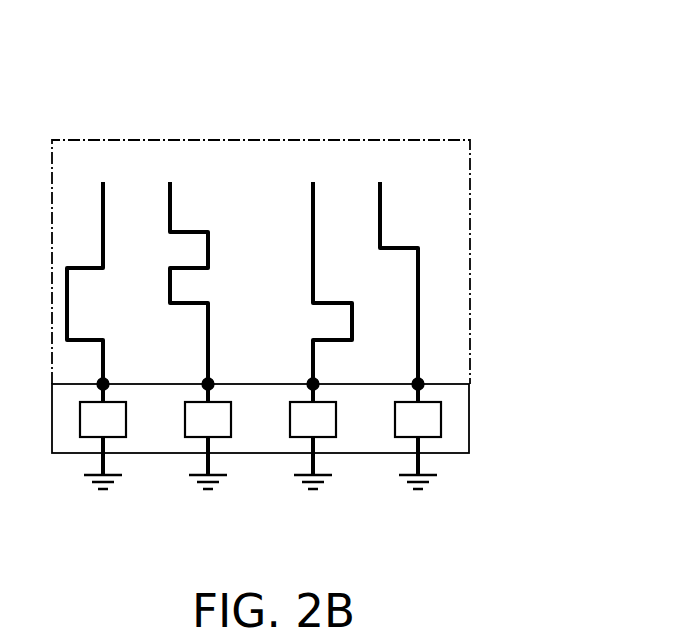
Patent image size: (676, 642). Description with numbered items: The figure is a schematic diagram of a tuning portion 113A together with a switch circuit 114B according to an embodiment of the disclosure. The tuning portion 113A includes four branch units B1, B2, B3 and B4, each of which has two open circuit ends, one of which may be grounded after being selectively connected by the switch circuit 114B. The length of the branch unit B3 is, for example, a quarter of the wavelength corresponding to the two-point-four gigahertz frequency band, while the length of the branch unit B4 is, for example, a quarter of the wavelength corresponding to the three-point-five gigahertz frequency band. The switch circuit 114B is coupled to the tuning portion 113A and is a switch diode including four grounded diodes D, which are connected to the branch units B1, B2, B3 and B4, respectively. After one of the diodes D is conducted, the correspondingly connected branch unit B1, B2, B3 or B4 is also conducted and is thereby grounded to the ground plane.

The tuning portion 113A is at (309, 262).
The switch circuit 114B is at (309, 459).
The branch unit B1 is at (93, 264).
The branch unit B2 is at (182, 264).
The branch unit B3 is at (326, 264).
The branch unit B4 is at (392, 264).
The diode D is at (126, 420).